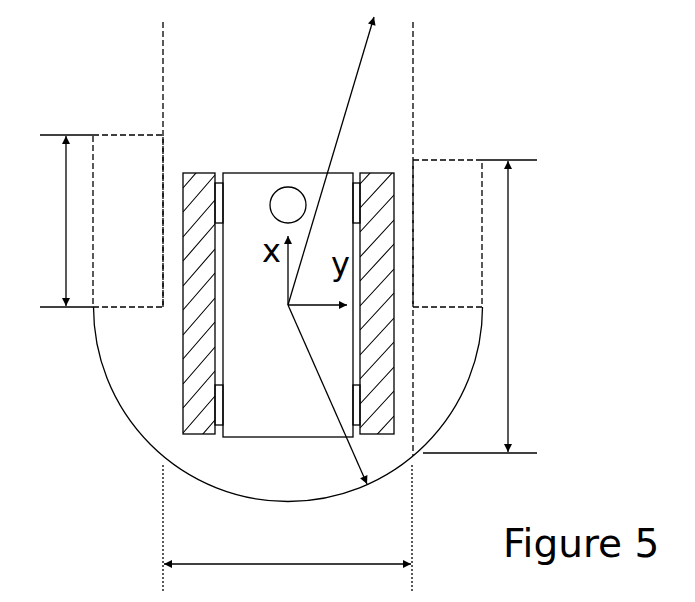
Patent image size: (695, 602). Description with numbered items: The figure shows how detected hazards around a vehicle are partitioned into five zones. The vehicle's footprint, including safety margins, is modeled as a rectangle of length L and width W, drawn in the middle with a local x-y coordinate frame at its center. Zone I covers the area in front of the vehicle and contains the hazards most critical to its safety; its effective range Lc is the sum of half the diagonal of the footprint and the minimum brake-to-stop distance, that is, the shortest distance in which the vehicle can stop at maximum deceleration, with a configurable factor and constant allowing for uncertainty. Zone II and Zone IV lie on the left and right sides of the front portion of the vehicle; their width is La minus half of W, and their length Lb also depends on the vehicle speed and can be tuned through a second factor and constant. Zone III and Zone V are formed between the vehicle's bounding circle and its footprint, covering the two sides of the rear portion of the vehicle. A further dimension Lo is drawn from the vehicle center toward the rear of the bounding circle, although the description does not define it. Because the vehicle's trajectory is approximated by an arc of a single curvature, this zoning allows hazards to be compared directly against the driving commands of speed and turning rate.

The effective range of Zone I Lc is at (331, 152).
The outer length dimension Lo is at (327, 399).
The length of Zones II and IV Lb is at (55, 221).
The footprint length L is at (484, 306).
The footprint width W is at (287, 528).
The Zone I is at (300, 77).
The Zone II is at (132, 217).
The Zone III is at (135, 350).
The Zone IV is at (458, 237).
The Zone V is at (446, 370).